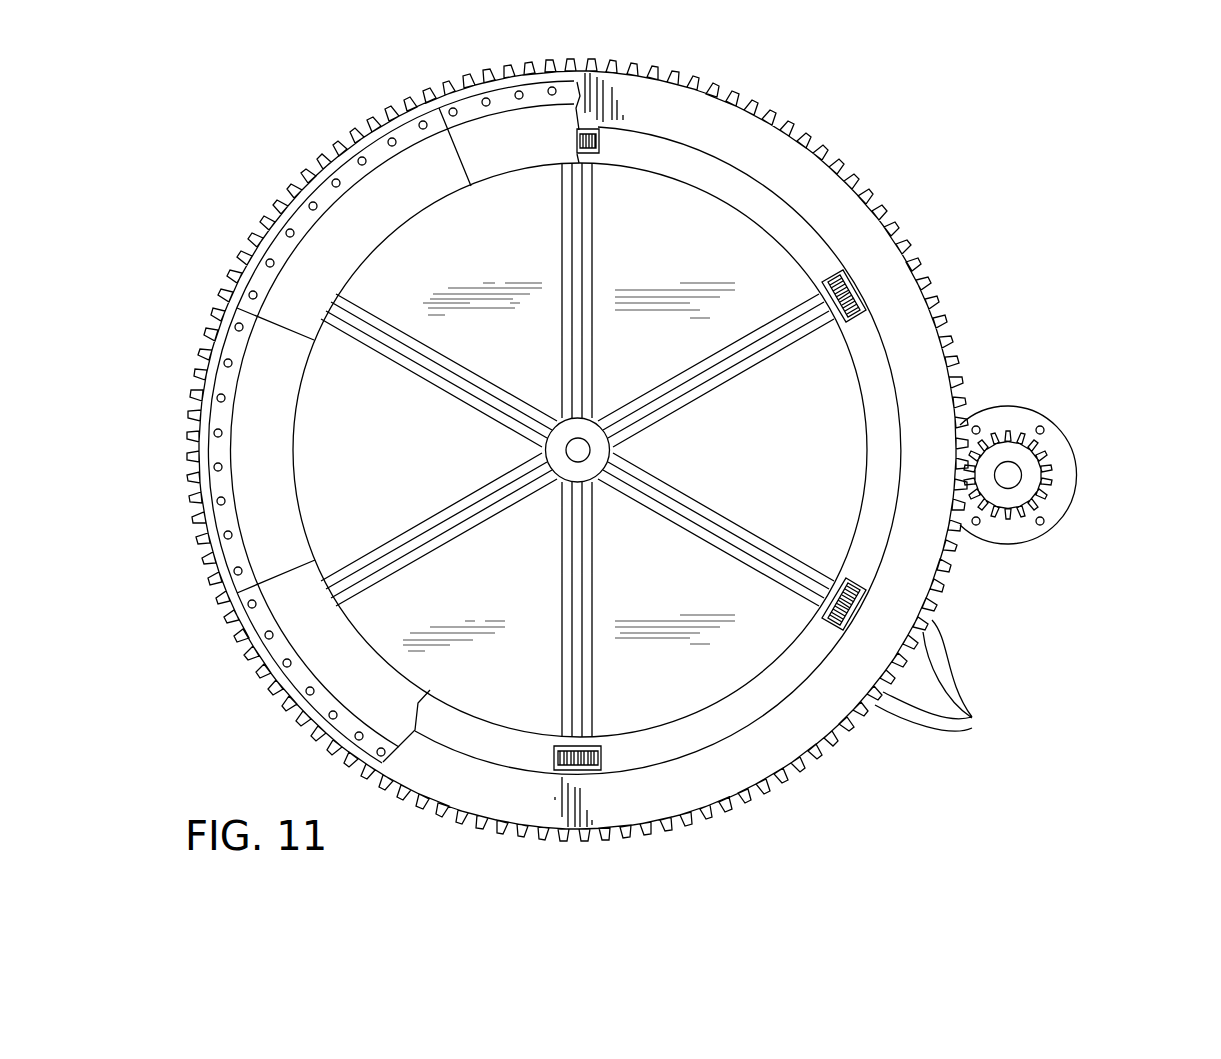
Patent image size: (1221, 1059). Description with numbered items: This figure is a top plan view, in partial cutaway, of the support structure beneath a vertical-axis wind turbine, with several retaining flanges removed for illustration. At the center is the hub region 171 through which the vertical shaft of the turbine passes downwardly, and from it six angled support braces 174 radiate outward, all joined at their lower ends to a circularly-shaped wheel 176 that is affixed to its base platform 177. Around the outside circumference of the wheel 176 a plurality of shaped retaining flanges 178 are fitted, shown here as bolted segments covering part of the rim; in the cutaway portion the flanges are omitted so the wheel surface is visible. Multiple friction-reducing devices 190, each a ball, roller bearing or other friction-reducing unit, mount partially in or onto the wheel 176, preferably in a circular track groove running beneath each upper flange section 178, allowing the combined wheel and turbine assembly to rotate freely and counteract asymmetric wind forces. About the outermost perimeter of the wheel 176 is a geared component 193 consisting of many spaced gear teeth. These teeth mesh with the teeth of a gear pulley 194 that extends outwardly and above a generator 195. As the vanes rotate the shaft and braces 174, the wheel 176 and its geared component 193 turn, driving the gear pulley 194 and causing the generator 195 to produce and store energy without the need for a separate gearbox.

The hub 171 is at (583, 445).
The angled support braces 174 is at (562, 588).
The wheel 176 is at (877, 467).
The base platform 177 is at (680, 588).
The retaining flanges 178 is at (393, 208).
The friction reducing devices 190 is at (824, 291).
The geared component 193 is at (953, 678).
The gear pulley 194 is at (1052, 455).
The generator 195 is at (1080, 478).